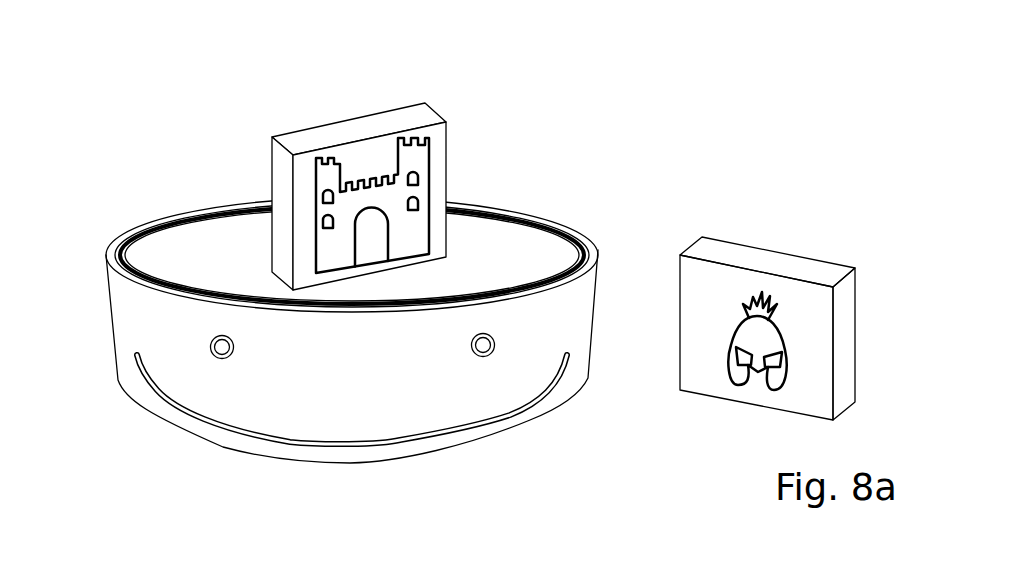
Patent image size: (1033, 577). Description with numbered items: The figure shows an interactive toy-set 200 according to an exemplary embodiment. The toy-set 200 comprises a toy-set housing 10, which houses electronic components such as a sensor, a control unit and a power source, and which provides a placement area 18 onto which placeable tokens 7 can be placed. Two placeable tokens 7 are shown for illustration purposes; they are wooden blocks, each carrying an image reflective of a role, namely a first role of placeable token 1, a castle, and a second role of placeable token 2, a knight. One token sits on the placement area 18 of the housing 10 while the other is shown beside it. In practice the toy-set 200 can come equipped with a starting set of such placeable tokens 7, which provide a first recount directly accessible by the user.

The interactive toy-set 200 is at (443, 236).
The toy-set housing 10 is at (162, 328).
The placement area 18 is at (182, 244).
The placeable tokens 7 is at (563, 219).
The first role of placeable token 1 is at (443, 166).
The second role of placeable token 2 is at (722, 297).